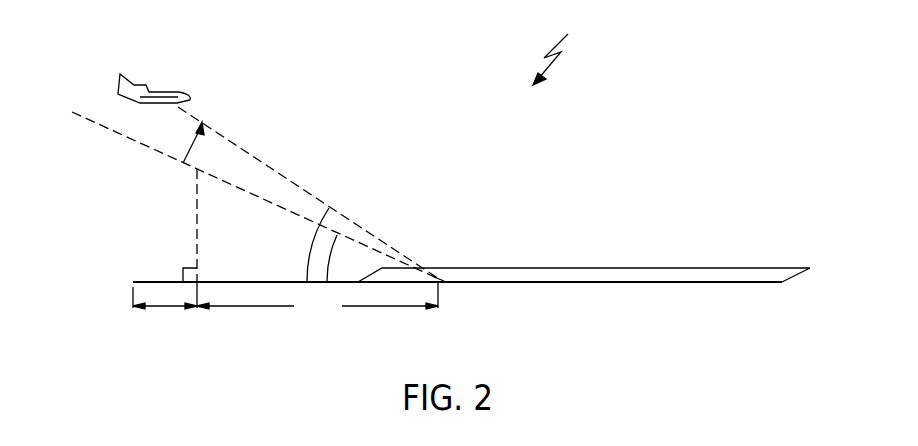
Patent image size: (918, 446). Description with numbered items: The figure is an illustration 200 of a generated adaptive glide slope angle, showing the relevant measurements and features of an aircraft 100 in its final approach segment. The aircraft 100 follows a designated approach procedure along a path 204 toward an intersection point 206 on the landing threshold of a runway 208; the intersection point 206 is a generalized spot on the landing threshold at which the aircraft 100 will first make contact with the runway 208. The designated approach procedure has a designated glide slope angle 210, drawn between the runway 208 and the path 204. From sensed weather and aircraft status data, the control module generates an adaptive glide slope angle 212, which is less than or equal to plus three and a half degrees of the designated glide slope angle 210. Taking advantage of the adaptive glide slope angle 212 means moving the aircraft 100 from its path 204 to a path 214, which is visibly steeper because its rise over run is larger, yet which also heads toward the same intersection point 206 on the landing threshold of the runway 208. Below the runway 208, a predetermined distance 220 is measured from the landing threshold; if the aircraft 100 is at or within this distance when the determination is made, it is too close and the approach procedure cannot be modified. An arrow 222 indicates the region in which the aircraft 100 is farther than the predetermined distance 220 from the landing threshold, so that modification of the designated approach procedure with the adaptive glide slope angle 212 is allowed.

The aircraft 100 is at (172, 90).
The approach geometry 200 is at (565, 47).
The path 204 is at (125, 136).
The intersection point 206 is at (440, 280).
The runway 208 is at (592, 268).
The designated glide slope angle D_GSA 210 is at (332, 248).
The adaptive glide slope angle A_GSA 212 is at (308, 260).
The path 214 is at (282, 175).
The predetermined distance 220 is at (317, 307).
The arrow 222 is at (168, 308).